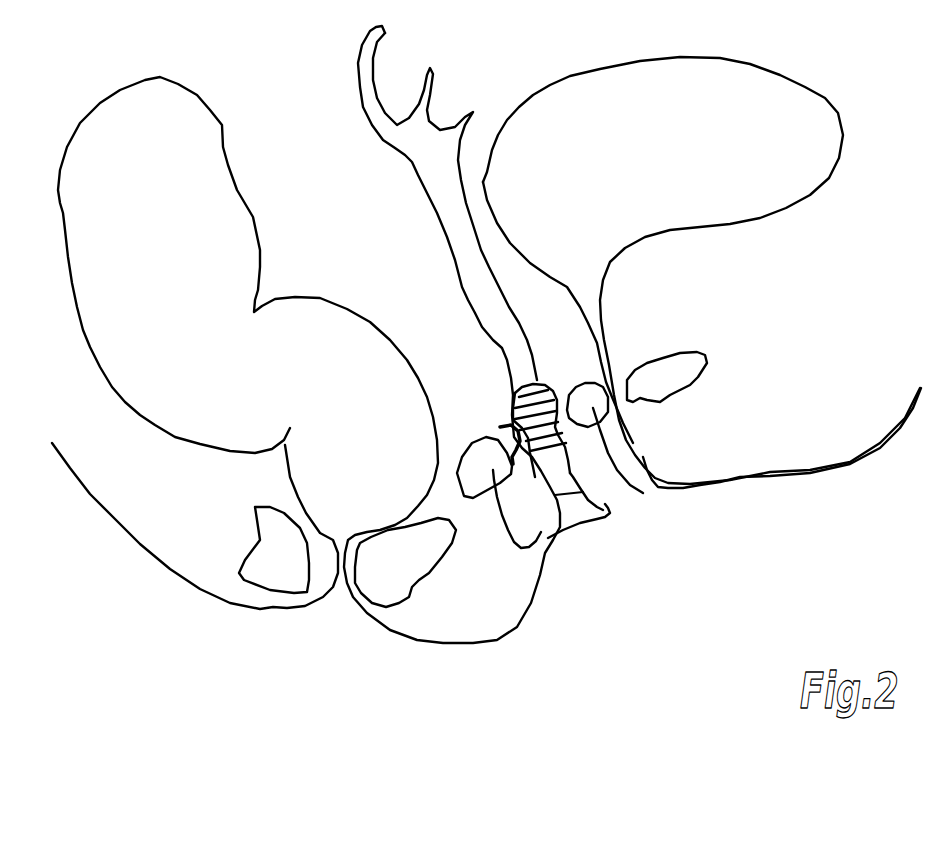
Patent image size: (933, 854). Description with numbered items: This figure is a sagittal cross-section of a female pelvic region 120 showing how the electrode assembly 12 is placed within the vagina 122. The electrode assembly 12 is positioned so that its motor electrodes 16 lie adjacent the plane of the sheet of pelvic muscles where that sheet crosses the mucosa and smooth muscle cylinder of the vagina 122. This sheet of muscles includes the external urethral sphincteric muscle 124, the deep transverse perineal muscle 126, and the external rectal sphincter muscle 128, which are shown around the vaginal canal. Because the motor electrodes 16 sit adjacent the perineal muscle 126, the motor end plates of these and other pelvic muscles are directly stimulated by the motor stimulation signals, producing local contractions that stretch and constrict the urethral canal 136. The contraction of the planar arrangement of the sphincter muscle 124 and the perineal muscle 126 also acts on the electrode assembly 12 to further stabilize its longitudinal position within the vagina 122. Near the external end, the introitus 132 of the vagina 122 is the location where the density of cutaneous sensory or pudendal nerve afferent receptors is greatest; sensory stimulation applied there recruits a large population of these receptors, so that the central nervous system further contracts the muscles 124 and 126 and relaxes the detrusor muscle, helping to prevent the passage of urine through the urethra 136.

The electrode assembly 12 is at (603, 508).
The motor electrodes 16 is at (510, 427).
The female pelvic region 120 is at (780, 512).
The vagina 122 is at (545, 372).
The external urethral sphincteric muscle 124 is at (710, 365).
The deep transverse perineal muscle 126 is at (638, 455).
The external rectal sphincter muscle 128 is at (283, 580).
The introitus 132 is at (560, 477).
The urethral canal 136 is at (632, 437).